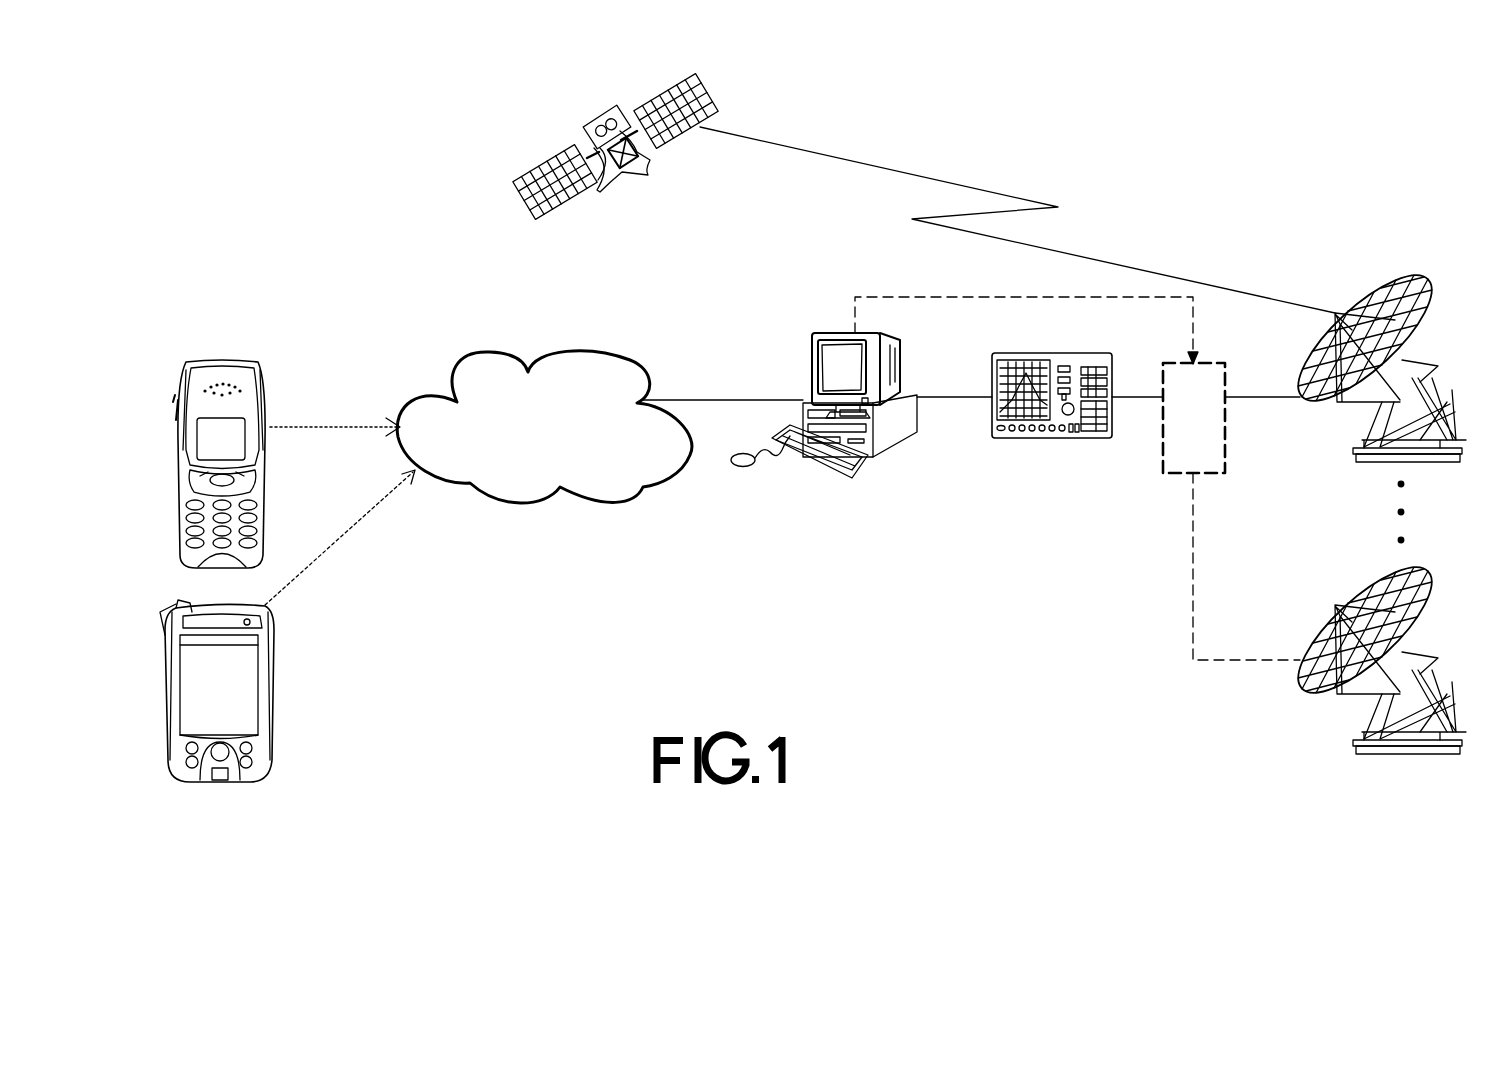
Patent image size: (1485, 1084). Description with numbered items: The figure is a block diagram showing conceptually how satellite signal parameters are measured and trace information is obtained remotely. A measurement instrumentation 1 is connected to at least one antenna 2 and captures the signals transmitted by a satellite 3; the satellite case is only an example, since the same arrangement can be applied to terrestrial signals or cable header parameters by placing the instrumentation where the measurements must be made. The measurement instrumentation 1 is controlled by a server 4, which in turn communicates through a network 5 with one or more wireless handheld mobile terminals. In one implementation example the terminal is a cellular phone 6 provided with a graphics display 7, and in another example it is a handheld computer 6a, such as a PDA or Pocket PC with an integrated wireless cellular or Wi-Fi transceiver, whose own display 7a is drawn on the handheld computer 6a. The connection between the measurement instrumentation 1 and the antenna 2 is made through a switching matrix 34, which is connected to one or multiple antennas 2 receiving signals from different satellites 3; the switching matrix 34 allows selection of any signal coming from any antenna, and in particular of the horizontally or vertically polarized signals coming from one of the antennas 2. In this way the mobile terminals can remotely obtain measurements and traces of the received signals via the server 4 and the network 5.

The measurement instrumentation 1 is at (1040, 428).
The antenna 2 is at (1395, 378).
The satellite 3 is at (583, 130).
The server 4 is at (825, 435).
The network 5 is at (485, 462).
The cellular phone 6 is at (220, 348).
The graphics display 7 is at (213, 432).
The handheld computer 6a is at (282, 737).
The display of personal digital assistant 7a is at (242, 666).
The switching matrix 34 is at (1178, 430).